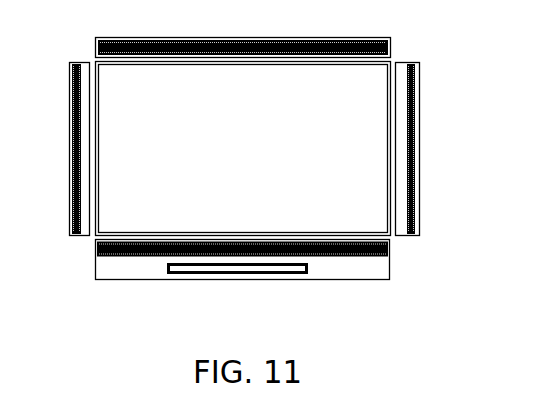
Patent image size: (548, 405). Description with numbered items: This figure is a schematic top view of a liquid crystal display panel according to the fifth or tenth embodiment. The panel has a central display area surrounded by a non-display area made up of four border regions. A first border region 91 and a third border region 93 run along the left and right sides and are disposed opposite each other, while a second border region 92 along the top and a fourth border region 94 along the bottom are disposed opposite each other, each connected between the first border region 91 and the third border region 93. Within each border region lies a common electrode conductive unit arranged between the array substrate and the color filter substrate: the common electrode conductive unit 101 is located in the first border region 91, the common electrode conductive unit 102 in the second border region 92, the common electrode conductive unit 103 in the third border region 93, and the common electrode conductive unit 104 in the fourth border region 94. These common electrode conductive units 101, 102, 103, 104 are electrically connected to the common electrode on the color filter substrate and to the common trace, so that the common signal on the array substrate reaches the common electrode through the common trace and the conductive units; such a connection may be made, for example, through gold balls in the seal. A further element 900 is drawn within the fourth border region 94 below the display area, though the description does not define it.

The first border region 91 is at (83, 121).
The second border region 92 is at (176, 37).
The third border region 93 is at (401, 117).
The fourth border region 94 is at (378, 271).
The common electrode conductive unit 101 is at (73, 167).
The common electrode conductive unit 102 is at (253, 42).
The common electrode conductive unit 103 is at (412, 170).
The common electrode conductive unit 104 is at (390, 251).
The circuit board 900 is at (303, 272).